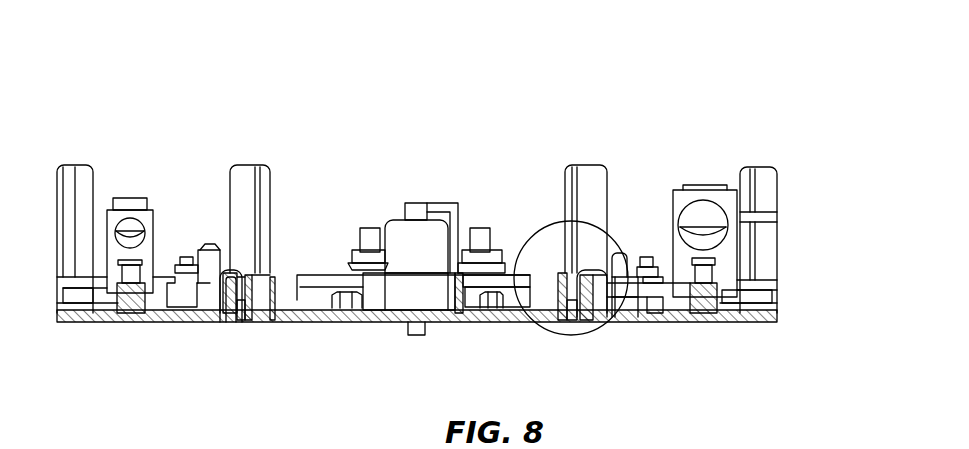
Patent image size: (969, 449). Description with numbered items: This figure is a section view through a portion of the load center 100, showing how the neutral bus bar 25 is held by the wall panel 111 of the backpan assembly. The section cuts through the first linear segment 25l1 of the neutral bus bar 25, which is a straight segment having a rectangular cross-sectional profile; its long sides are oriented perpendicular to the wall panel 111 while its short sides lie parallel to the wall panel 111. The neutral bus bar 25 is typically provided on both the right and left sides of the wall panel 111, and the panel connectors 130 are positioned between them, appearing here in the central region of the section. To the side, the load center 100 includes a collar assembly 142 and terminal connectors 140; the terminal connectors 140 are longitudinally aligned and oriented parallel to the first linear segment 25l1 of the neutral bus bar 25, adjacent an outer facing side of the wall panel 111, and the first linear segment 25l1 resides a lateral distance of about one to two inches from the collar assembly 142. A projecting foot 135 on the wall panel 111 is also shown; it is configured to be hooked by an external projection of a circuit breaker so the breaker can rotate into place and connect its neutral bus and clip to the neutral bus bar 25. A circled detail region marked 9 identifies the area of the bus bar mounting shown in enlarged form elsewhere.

The load center 100 is at (255, 90).
The neutral bus bar 25 is at (568, 280).
The first linear segment 25l1 is at (245, 322).
The panel connector 130 is at (415, 203).
The wall panel 111 is at (313, 320).
The projecting foot 135 is at (627, 322).
The terminal connector 140 is at (702, 272).
The collar assembly 142 is at (712, 208).
The section line 9- 9 is at (559, 220).